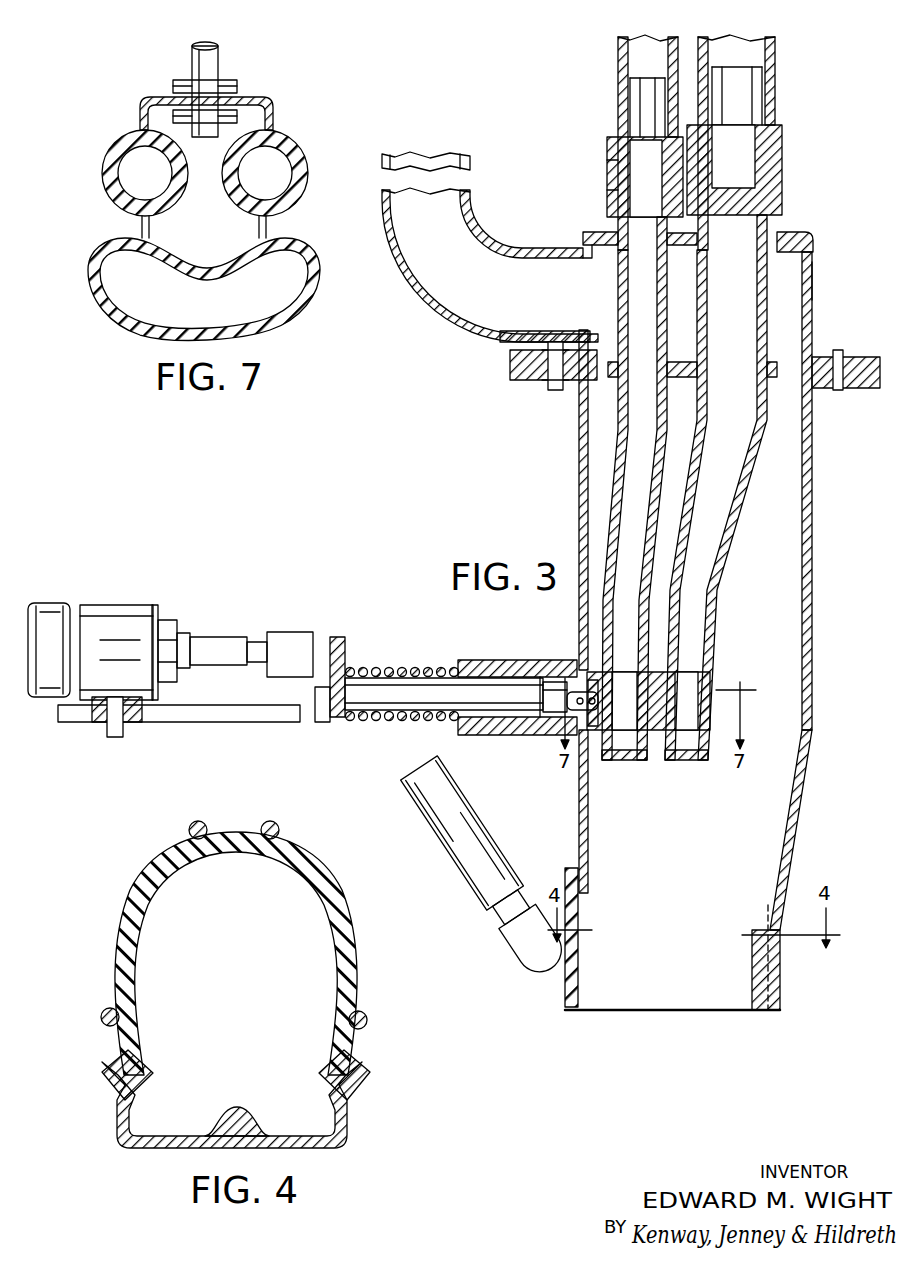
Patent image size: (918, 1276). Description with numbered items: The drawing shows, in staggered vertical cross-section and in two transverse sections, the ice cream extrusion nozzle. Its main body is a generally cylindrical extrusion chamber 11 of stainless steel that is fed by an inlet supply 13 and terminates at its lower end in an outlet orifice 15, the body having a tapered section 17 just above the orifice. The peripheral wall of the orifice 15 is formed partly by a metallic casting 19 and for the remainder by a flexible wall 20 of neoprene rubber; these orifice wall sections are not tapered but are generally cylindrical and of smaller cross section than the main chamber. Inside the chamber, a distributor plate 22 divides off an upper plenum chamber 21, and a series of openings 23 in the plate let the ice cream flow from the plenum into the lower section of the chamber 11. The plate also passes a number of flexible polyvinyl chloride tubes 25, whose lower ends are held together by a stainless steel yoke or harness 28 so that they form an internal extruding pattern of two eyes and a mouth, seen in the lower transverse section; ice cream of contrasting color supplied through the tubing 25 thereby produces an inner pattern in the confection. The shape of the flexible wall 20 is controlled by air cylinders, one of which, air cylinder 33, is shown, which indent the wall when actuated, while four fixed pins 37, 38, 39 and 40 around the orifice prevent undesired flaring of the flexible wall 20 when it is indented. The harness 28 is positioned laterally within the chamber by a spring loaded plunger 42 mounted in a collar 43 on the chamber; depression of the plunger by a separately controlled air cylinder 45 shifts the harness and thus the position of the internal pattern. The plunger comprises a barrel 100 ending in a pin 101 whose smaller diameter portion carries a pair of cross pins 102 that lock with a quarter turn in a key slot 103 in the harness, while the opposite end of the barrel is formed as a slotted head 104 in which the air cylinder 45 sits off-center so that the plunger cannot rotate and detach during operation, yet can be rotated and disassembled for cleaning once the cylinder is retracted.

In FIG. 3, the extrusion chamber 11 is at (812, 518).
In FIG. 3, the inlet supply 13 is at (518, 300).
In FIG. 3, the outlet orifice 15 is at (693, 993).
In FIG. 3, the tapered section 17 is at (791, 802).
In FIG. 4, the metallic casting 19 is at (350, 1130).
In FIG. 3, the metallic casting 19 is at (780, 902).
In FIG. 4, the flexible wall 20 is at (356, 950).
In FIG. 3, the flexible wall 20 is at (566, 881).
In FIG. 3, the plenum chamber 21 is at (787, 292).
In FIG. 3, the distributor plate 22 is at (771, 362).
In FIG. 3, the openings 23 is at (607, 378).
In FIG. 7, the flexible tubes 25 is at (303, 176).
In FIG. 3, the flexible tubes 25 is at (640, 406).
In FIG. 7, the yoke or harness 28 is at (282, 140).
In FIG. 3, the yoke or harness 28 is at (709, 681).
In FIG. 3, the air cylinder 33 is at (433, 816).
In FIG. 4, the fixed pin 37 is at (101, 1017).
In FIG. 4, the fixed pin 38 is at (198, 814).
In FIG. 4, the fixed pin 39 is at (278, 816).
In FIG. 4, the fixed pin 40 is at (364, 1021).
In FIG. 3, the spring loaded plunger 42 is at (395, 702).
In FIG. 3, the collar 43 is at (526, 731).
In FIG. 3, the air cylinder 45 is at (222, 645).
In FIG. 3, the barrel 100 is at (401, 671).
In FIG. 7, the pin 101 is at (206, 65).
In FIG. 3, the pin 101 is at (549, 683).
In FIG. 7, the cross pins 102 is at (229, 96).
In FIG. 3, the cross pins 102 is at (591, 722).
In FIG. 3, the key slot 103 is at (586, 692).
In FIG. 3, the slotted head 104 is at (331, 713).